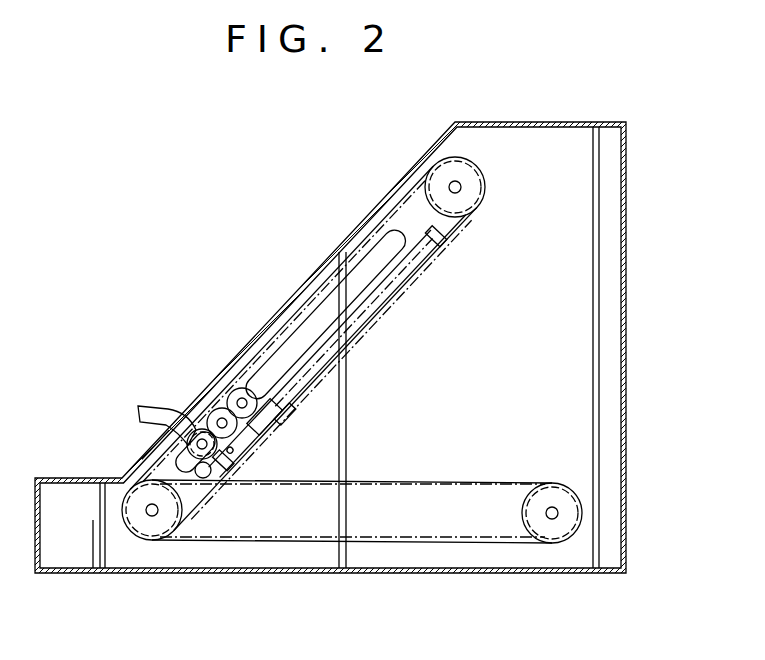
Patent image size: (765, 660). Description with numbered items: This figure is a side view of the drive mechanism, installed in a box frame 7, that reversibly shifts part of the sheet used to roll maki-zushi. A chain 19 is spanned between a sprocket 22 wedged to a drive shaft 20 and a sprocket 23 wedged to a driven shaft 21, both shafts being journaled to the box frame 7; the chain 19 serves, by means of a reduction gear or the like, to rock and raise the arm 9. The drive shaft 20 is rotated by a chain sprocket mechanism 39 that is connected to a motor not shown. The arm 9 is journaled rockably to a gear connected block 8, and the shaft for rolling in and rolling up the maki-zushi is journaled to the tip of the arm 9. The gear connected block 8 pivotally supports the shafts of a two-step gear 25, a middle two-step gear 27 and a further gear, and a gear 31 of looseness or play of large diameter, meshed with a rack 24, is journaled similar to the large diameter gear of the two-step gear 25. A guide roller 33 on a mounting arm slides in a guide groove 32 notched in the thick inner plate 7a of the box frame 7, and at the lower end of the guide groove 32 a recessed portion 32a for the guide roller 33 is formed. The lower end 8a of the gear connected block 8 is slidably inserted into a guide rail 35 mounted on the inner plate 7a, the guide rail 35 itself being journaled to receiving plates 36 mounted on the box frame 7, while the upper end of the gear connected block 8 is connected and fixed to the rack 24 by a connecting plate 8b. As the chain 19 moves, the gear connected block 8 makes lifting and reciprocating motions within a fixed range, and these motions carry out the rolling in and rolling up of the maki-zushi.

The box frame 7 is at (627, 210).
The inner plate 7a is at (553, 150).
The gear connected block 8 is at (265, 410).
The lower end of gear connected block 8a is at (263, 435).
The connecting plate 8b is at (153, 448).
The arm 9 is at (152, 410).
The chain 19 is at (372, 232).
The drive shaft 20 is at (150, 517).
The driven shaft 21 is at (449, 184).
The sprocket 22 is at (165, 527).
The sprocket 23 is at (452, 168).
The rack 24 is at (222, 408).
The two-step gear 25 is at (242, 388).
The middle two-step gear 27 is at (201, 429).
The gear of looseness or play 31 is at (228, 450).
The guide groove 32 is at (340, 297).
The recessed portion 32a is at (187, 465).
The guide roller 33 is at (203, 478).
The guide rail 35 is at (385, 300).
The receiving plate 36 is at (438, 250).
The chain sprocket mechanism 39 is at (360, 542).